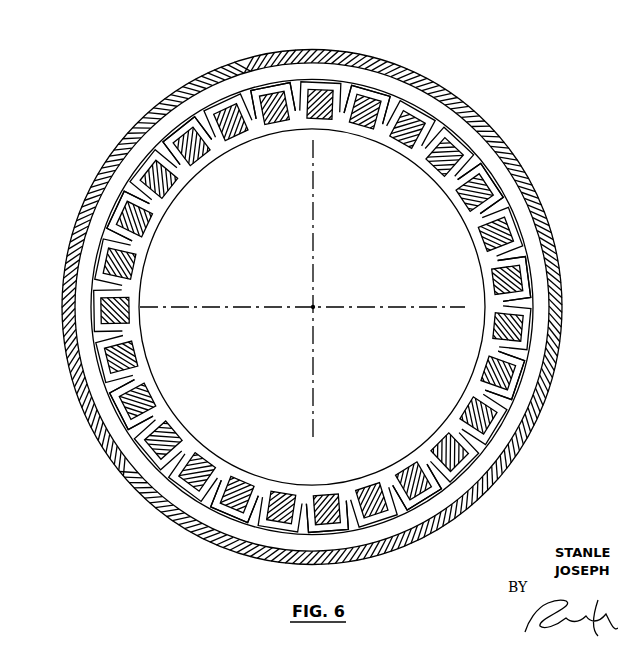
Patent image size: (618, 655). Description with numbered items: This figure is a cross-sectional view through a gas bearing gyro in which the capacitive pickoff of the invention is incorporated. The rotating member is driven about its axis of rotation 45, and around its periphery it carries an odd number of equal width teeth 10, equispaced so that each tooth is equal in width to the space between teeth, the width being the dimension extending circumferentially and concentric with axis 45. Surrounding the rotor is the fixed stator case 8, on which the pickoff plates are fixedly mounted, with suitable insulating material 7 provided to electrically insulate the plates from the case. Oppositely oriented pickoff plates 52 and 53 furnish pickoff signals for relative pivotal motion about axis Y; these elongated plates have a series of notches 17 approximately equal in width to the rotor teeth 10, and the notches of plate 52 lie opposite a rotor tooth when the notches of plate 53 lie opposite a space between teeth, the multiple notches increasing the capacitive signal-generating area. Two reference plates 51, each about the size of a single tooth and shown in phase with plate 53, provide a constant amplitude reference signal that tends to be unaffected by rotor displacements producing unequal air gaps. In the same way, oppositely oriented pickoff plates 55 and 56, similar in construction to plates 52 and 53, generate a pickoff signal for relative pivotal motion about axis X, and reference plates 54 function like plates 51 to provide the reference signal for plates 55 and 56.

The insulating material 7 is at (490, 167).
The stator case 8 is at (565, 304).
The rotor teeth 10 is at (127, 300).
The notches 17 is at (131, 235).
The axis of rotation 45 is at (316, 305).
The reference plates 51 is at (148, 163).
The pickoff plate 52 is at (539, 277).
The pickoff plate 53 is at (89, 307).
The reference plates 54 is at (446, 132).
The pickoff plate 55 is at (322, 84).
The pickoff plate 56 is at (393, 526).
The axis X is at (462, 306).
The axis Y is at (313, 470).